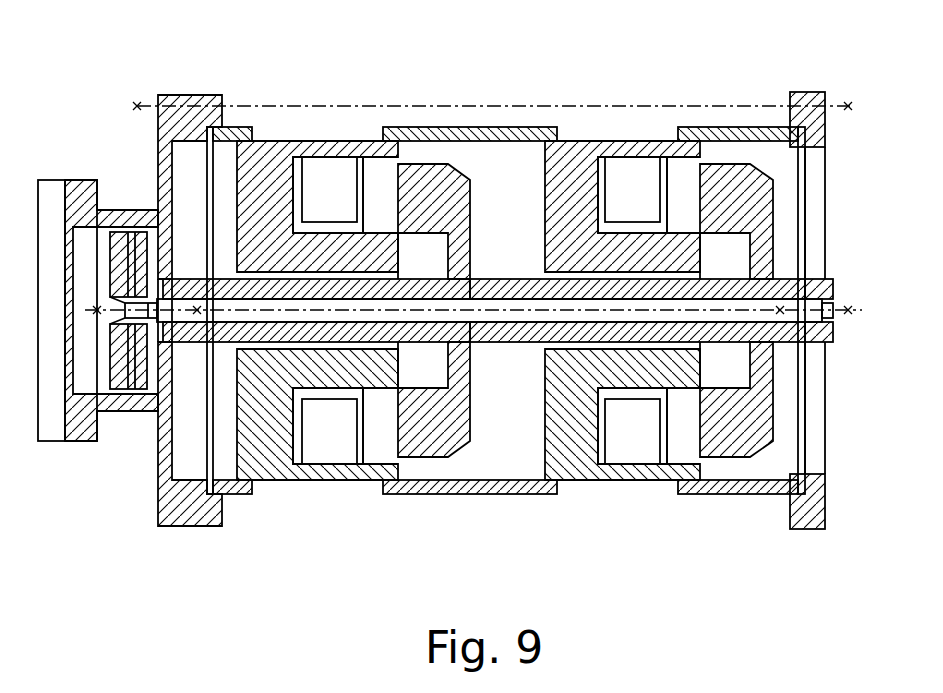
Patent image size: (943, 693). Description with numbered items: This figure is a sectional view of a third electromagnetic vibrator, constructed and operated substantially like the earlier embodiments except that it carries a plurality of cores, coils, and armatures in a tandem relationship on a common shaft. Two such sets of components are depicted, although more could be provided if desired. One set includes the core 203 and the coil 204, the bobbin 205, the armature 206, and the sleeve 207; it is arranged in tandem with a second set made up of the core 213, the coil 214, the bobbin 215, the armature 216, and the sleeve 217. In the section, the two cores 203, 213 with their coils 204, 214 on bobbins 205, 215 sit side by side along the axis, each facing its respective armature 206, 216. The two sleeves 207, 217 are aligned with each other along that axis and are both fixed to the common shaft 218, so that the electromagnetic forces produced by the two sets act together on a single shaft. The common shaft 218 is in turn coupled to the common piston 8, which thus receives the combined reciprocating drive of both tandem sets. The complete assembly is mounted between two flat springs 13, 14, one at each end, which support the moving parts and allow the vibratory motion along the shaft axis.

The piston 8 is at (128, 365).
The flat spring 13 is at (207, 186).
The flat spring 14 is at (802, 192).
The core 203 is at (308, 134).
The coil 204 is at (342, 175).
The bobbin 205 is at (298, 172).
The armature 206 is at (460, 162).
The sleeve 207 is at (317, 328).
The core 213 is at (618, 134).
The coil 214 is at (640, 172).
The bobbin 215 is at (602, 170).
The armature 216 is at (762, 158).
The sleeve 217 is at (610, 322).
The common shaft 218 is at (522, 312).